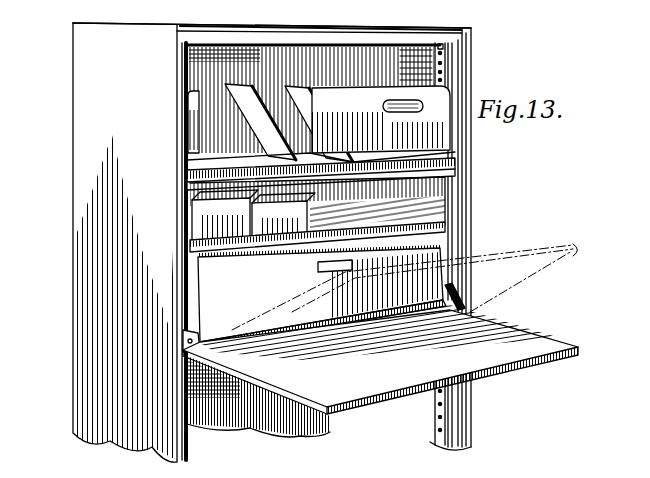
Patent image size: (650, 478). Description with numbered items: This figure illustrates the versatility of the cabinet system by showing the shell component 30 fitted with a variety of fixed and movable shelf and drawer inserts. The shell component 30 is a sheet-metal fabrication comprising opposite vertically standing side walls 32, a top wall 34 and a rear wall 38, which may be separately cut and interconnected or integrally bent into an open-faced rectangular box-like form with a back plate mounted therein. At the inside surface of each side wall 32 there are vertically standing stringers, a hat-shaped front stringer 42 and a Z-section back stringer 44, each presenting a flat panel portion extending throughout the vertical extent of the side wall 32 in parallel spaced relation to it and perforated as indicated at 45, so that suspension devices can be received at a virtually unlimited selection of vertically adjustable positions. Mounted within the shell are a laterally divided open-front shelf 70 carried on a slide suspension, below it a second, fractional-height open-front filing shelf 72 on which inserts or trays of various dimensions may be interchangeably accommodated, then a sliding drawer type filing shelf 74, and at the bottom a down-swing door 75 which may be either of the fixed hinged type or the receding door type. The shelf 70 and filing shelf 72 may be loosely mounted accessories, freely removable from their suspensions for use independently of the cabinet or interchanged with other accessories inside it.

The shell component 30 is at (62, 246).
The side wall 32 is at (83, 148).
The top wall 34 is at (272, 26).
The rear wall 38 is at (311, 100).
The front stringer 42 is at (449, 67).
The back stringer 44 is at (405, 86).
The perforations 45 is at (446, 48).
The laterally divided open-front shelf 70 is at (359, 136).
The fractional-height open-front filing shelf 72 is at (446, 207).
The sliding drawer type filing shelf 74 is at (446, 282).
The down-swing door 75 is at (382, 362).